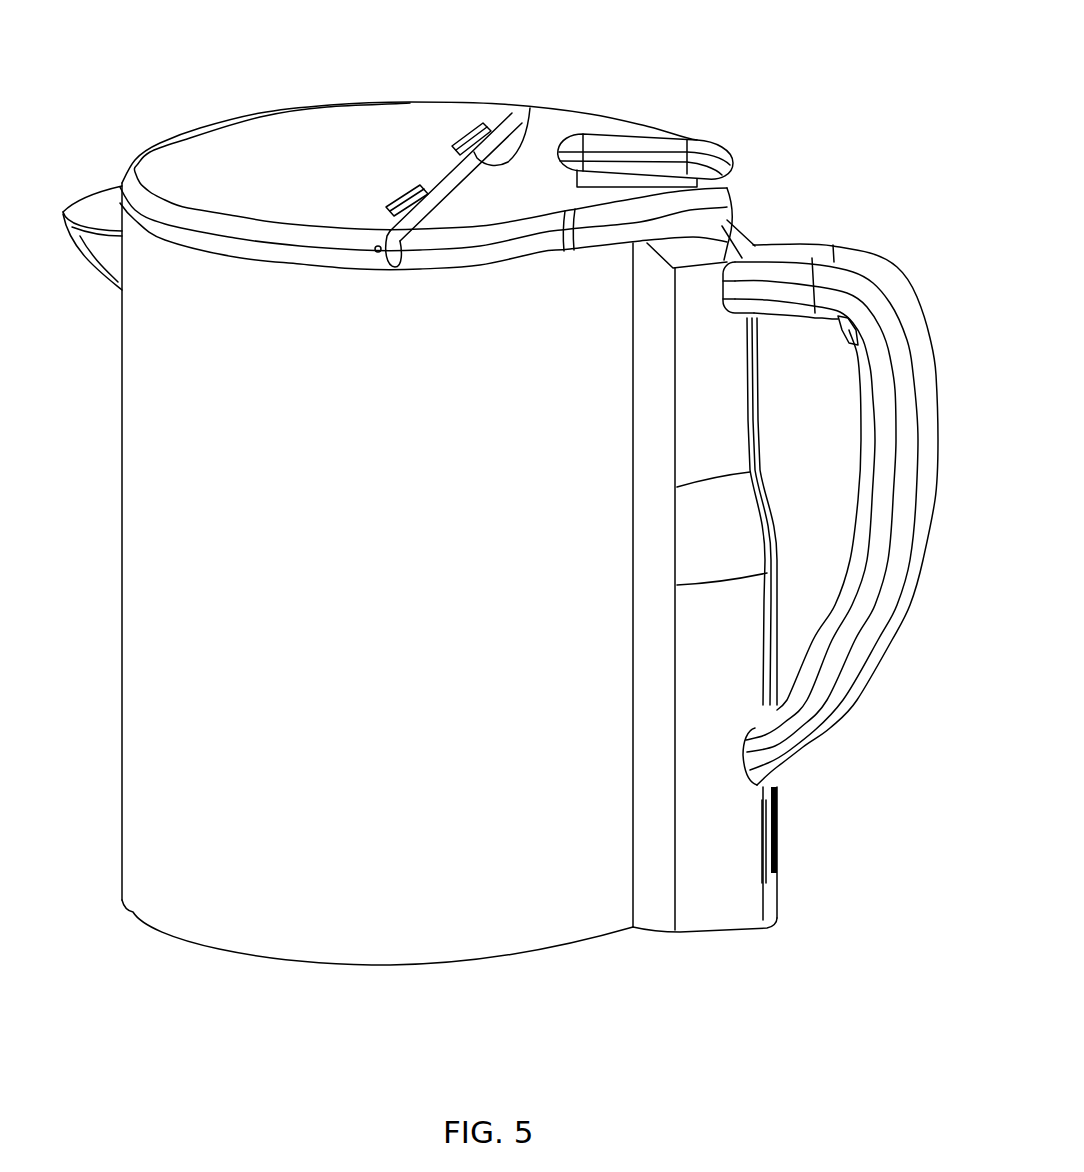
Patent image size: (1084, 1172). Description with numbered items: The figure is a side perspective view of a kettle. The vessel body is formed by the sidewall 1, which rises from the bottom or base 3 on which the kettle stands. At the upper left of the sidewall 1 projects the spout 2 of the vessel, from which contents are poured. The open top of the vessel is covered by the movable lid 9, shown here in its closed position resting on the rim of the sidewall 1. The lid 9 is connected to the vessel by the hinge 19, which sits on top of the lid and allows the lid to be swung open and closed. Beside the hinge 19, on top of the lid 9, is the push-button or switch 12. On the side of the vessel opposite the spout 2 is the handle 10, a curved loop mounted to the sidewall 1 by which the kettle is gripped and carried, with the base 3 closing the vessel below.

The sidewall 1 is at (143, 490).
The spout 2 is at (118, 288).
The bottom or base 3 is at (612, 950).
The movable lid 9 is at (233, 170).
The handle 10 is at (893, 280).
The push-button or switch 12 is at (728, 155).
The hinge 19 is at (530, 108).